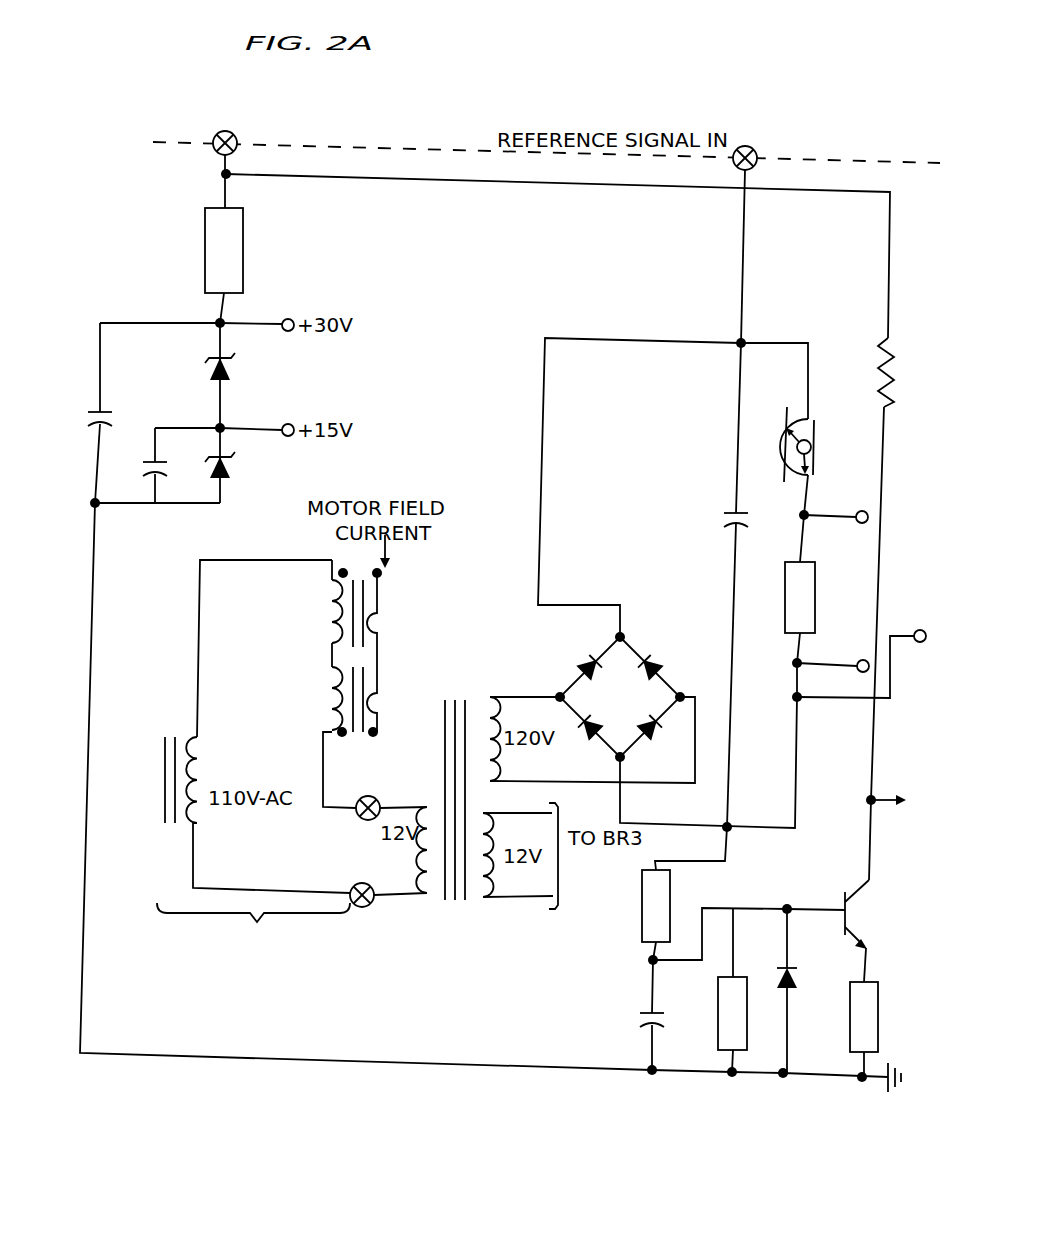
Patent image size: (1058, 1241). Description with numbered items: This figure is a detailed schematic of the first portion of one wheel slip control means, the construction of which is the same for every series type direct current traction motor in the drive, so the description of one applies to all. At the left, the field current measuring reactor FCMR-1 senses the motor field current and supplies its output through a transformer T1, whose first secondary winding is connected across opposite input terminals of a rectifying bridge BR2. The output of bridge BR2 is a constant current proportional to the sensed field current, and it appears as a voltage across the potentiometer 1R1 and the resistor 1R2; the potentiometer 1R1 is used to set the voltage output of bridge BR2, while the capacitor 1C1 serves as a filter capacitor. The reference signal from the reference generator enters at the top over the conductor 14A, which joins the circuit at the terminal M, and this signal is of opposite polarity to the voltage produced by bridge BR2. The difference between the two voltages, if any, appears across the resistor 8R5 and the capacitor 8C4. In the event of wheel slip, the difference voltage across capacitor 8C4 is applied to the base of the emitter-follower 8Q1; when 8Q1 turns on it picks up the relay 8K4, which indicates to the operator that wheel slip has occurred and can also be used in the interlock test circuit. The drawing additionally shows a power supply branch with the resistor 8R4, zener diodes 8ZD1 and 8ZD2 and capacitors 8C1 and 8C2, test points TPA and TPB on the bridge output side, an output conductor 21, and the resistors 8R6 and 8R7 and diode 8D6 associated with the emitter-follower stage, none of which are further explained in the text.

The reference signal input terminal M is at (752, 166).
The resistor 8R4 is at (248, 250).
The zener diode 8ZD1 is at (251, 369).
The zener diode 8ZD2 is at (251, 468).
The capacitor 8C1 is at (116, 413).
The capacitor 8C2 is at (140, 465).
The field current measuring reactor FCMR-1 is at (296, 733).
The transformer T1 is at (570, 787).
The rectifying bridge BR2 is at (620, 697).
The conductor 14A is at (743, 253).
The capacitor 1C1 is at (718, 520).
The potentiometer 1R1 is at (777, 429).
The test point A TPA is at (843, 505).
The resistor 1R2 is at (779, 597).
The test point B TPB is at (833, 654).
The output line 21 is at (823, 700).
The relay 8K4 is at (858, 363).
The emitter-follower 8Q1 is at (843, 914).
The resistor 8R7 is at (840, 1017).
The resistor 8R5 is at (637, 906).
The capacitor 8C4 is at (635, 1026).
The resistor 8R6 is at (709, 990).
The diode 8D6 is at (770, 991).